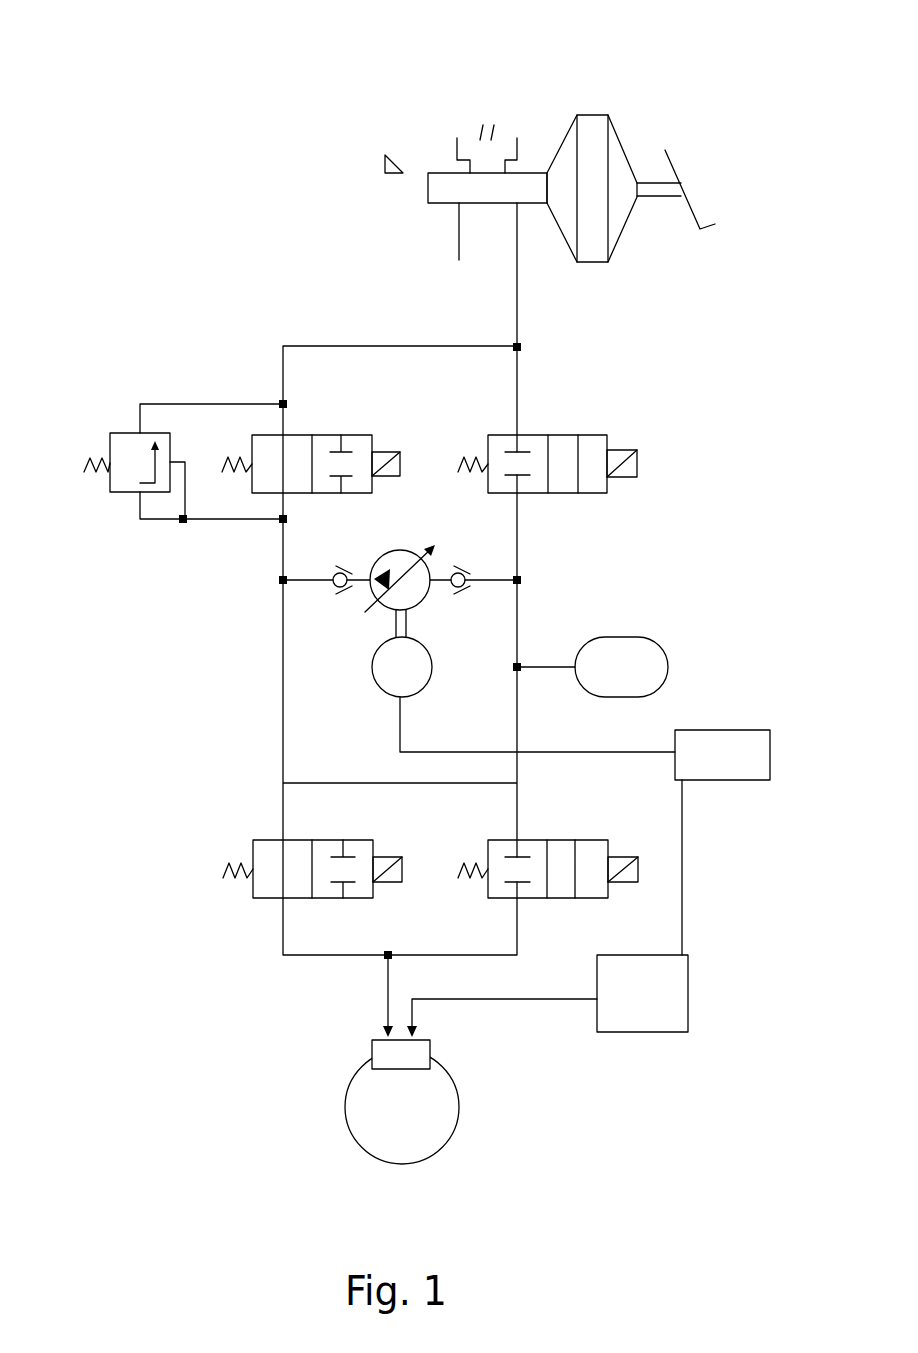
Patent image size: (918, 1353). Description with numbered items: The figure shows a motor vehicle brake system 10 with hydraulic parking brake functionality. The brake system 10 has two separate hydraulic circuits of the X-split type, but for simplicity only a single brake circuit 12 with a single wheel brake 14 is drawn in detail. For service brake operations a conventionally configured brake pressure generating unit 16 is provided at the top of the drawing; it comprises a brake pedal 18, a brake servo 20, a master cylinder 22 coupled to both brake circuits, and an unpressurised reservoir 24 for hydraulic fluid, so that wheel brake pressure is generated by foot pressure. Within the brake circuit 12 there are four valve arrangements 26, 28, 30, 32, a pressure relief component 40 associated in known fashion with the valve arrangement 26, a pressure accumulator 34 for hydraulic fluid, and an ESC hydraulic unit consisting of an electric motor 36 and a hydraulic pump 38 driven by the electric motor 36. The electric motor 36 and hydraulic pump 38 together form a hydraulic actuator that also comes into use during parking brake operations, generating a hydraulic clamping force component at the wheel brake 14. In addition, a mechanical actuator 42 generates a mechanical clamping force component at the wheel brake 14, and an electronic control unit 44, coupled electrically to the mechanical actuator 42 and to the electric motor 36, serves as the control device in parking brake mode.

The motor vehicle brake system 10 is at (122, 188).
The brake circuit 12 is at (545, 315).
The wheel brake 14 is at (332, 1071).
The brake pressure generating unit 16 is at (385, 165).
The brake pedal 18 is at (677, 160).
The brake servo 20 is at (595, 118).
The master cylinder 22 is at (452, 197).
The unpressurised reservoir 24 is at (473, 148).
The valve arrangement 26 is at (325, 435).
The valve arrangement 28 is at (343, 840).
The valve arrangement 30 is at (585, 435).
The valve arrangement 32 is at (565, 840).
The pressure accumulator 34 is at (631, 637).
The electric motor 36 is at (378, 683).
The hydraulic pump 38 is at (387, 553).
The pressure relief component 40 is at (128, 445).
The mechanical actuator 42 is at (668, 1032).
The electronic control unit 44 is at (725, 780).